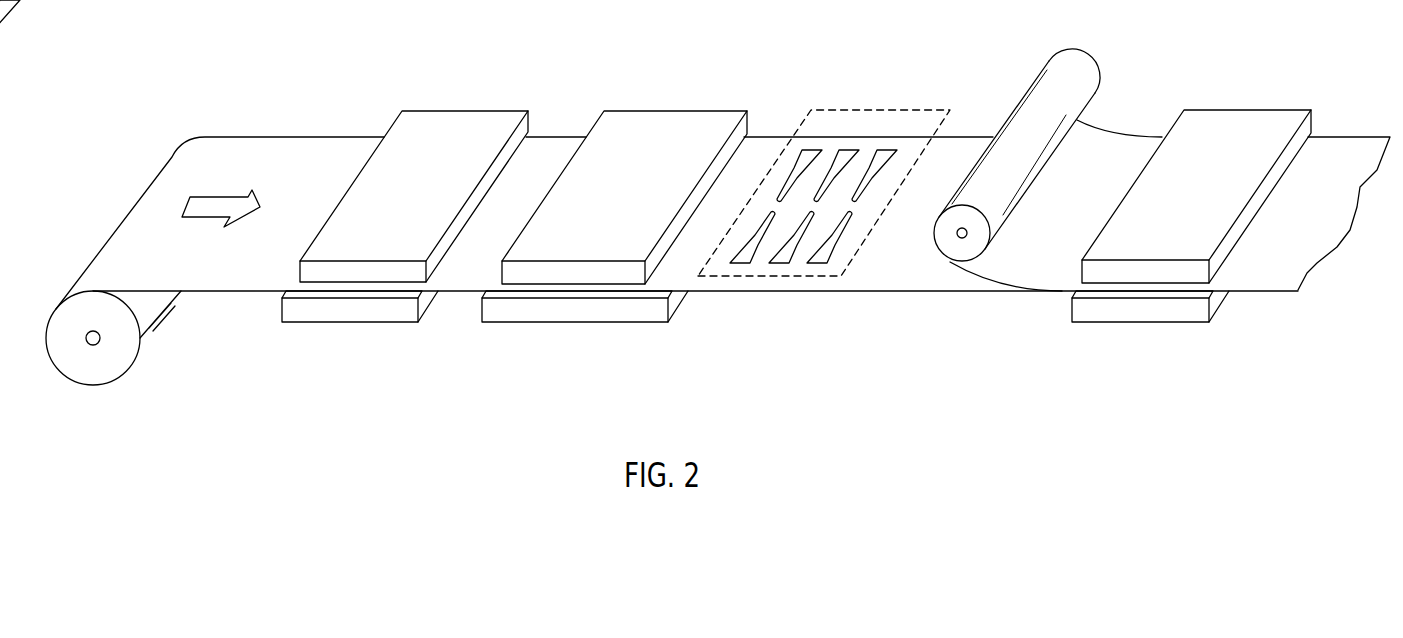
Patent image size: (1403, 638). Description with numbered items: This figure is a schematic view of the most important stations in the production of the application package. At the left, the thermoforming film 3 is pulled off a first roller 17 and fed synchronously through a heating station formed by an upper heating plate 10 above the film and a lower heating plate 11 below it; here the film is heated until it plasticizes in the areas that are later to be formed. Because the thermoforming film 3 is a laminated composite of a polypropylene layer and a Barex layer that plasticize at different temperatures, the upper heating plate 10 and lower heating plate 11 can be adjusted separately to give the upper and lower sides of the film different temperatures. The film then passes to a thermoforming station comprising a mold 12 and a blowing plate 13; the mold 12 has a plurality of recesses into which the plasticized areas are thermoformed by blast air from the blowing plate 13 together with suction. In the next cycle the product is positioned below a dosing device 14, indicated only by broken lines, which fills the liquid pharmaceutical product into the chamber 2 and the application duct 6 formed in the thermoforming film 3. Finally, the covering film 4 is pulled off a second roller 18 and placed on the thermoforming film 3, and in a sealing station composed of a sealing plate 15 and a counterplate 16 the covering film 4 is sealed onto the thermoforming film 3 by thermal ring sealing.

The chamber 2 is at (448, 175).
The thermoforming film 3 is at (285, 158).
The covering film 4 is at (1112, 143).
The application duct 6 is at (850, 218).
The upper heating plate 10 is at (457, 127).
The lower heating plate 11 is at (352, 310).
The mold 12 is at (587, 308).
The blowing plate 13 is at (691, 127).
The dosing device 14 is at (900, 108).
The sealing plate 15 is at (1230, 127).
The counterplate 16 is at (1147, 307).
The first roller 17 is at (112, 353).
The second roller 18 is at (967, 248).